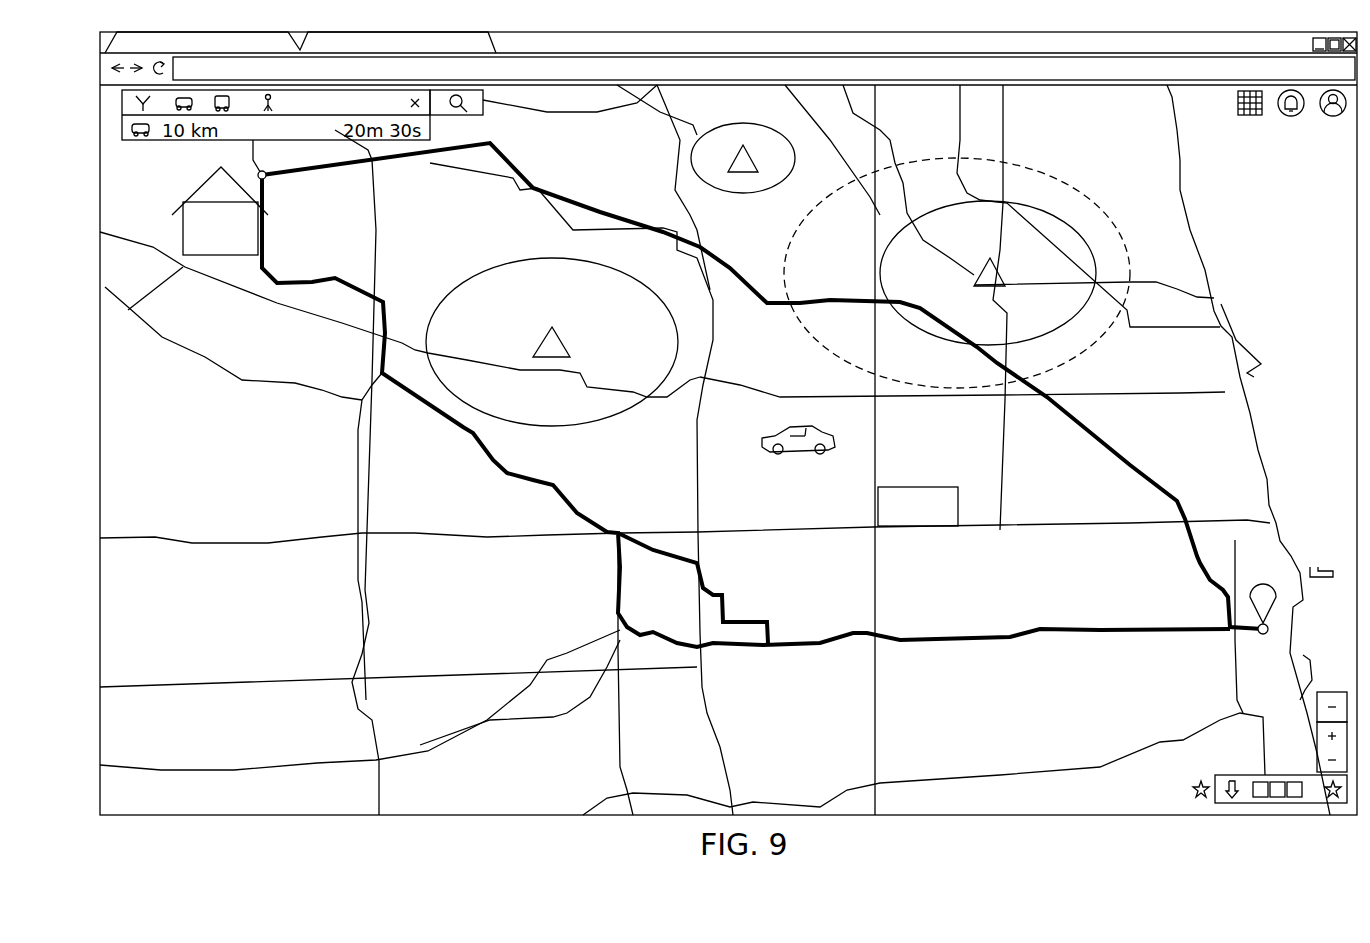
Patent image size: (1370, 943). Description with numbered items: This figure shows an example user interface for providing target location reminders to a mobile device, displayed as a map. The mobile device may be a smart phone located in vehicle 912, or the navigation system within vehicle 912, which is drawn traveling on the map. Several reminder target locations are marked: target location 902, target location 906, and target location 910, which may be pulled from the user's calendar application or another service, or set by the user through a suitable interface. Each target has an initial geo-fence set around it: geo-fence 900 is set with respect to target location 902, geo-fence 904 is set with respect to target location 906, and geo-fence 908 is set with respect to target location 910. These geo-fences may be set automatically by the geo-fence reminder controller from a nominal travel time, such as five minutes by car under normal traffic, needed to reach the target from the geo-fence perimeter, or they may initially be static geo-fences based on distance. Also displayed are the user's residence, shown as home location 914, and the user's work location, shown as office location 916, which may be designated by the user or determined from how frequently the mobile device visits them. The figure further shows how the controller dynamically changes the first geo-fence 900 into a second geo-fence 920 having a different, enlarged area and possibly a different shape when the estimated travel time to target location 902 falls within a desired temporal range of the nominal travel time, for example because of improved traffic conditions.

The geo-fence 900 is at (1085, 230).
The target location 902 is at (978, 279).
The geo-fence 904 is at (383, 345).
The target location 906 is at (545, 338).
The geo-fence 908 is at (750, 195).
The target location 910 is at (693, 150).
The vehicle 912 is at (760, 438).
The home location 914 is at (213, 178).
The office location 916 is at (878, 505).
The second geo-fence 920 is at (1095, 345).